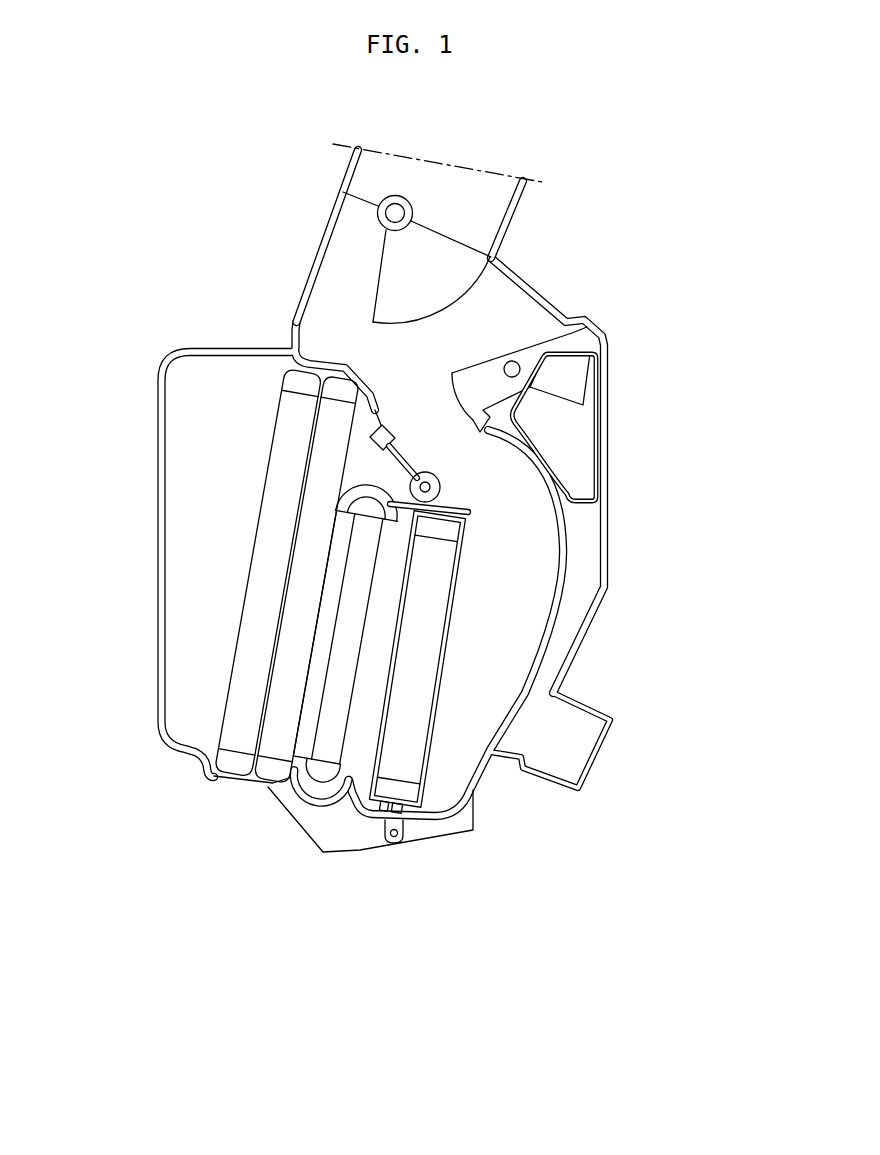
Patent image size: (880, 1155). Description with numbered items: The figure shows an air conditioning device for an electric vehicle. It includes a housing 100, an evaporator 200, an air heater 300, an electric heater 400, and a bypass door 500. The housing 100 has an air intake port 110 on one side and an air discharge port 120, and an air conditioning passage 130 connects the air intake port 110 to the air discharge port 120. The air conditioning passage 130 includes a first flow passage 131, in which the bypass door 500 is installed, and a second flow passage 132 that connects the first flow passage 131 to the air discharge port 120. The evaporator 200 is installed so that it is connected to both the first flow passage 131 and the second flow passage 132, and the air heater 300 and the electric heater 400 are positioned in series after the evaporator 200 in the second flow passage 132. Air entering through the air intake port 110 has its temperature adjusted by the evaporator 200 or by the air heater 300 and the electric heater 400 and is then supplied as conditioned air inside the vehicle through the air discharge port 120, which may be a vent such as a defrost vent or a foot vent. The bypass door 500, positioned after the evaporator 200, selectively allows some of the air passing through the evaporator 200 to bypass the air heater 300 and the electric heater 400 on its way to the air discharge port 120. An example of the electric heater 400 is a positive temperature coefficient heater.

The housing 100 is at (410, 518).
The air intake port 110 is at (187, 602).
The air discharge port 120 is at (464, 199).
The air conditioning passage 130 is at (588, 502).
The first flow passage 131 is at (372, 478).
The second flow passage 132 is at (482, 652).
The evaporator 200 is at (273, 784).
The air heater 300 is at (330, 715).
The electric heater 400 is at (403, 753).
The bypass door 500 is at (378, 470).